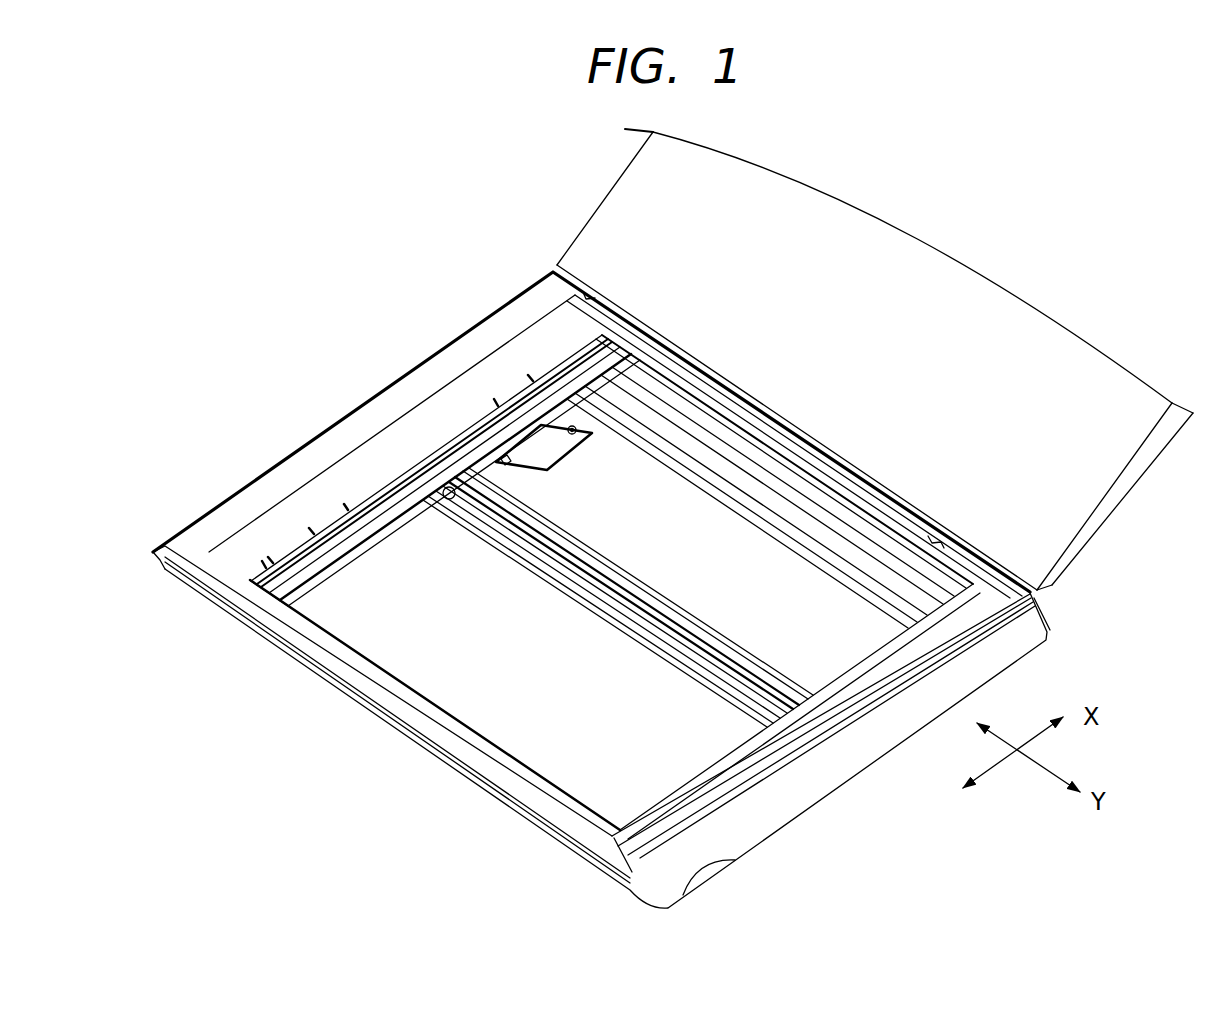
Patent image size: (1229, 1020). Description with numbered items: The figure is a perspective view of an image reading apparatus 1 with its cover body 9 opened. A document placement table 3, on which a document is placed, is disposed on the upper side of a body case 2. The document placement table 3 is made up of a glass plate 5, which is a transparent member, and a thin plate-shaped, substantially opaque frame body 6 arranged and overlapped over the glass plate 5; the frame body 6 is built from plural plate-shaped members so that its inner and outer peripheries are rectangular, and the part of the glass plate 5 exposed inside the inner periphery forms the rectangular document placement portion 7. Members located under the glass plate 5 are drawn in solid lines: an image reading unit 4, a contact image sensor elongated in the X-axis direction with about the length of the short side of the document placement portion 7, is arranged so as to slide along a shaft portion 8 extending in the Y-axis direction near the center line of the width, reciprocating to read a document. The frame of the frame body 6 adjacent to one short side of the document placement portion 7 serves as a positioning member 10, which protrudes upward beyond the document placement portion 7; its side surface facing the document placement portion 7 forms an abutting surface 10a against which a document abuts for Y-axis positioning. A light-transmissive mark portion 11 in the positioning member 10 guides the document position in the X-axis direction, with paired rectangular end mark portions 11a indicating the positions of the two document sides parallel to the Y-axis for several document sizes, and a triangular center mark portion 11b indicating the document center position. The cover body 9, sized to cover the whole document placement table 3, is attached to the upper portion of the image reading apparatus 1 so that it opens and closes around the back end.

The image reading apparatus 1 is at (358, 216).
The body case 2 is at (790, 803).
The document placement table 3 is at (472, 707).
The image reading unit 4 is at (382, 533).
The glass plate 5 is at (533, 768).
The frame body 6 is at (310, 647).
The document placement portion 7 is at (534, 645).
The shaft portion 8 is at (697, 662).
The cover body 9 is at (1088, 497).
The positioning member 10 is at (230, 540).
The abutting surface 10a is at (556, 362).
The mark portion 11 is at (417, 266).
The end mark portions 11a is at (495, 398).
The center mark portion 11b is at (420, 450).